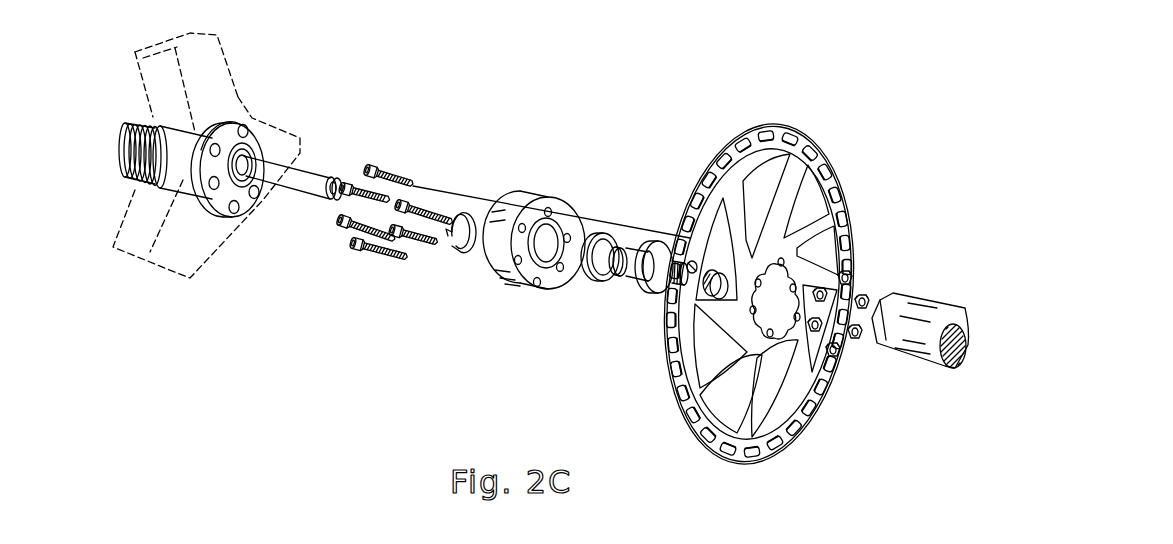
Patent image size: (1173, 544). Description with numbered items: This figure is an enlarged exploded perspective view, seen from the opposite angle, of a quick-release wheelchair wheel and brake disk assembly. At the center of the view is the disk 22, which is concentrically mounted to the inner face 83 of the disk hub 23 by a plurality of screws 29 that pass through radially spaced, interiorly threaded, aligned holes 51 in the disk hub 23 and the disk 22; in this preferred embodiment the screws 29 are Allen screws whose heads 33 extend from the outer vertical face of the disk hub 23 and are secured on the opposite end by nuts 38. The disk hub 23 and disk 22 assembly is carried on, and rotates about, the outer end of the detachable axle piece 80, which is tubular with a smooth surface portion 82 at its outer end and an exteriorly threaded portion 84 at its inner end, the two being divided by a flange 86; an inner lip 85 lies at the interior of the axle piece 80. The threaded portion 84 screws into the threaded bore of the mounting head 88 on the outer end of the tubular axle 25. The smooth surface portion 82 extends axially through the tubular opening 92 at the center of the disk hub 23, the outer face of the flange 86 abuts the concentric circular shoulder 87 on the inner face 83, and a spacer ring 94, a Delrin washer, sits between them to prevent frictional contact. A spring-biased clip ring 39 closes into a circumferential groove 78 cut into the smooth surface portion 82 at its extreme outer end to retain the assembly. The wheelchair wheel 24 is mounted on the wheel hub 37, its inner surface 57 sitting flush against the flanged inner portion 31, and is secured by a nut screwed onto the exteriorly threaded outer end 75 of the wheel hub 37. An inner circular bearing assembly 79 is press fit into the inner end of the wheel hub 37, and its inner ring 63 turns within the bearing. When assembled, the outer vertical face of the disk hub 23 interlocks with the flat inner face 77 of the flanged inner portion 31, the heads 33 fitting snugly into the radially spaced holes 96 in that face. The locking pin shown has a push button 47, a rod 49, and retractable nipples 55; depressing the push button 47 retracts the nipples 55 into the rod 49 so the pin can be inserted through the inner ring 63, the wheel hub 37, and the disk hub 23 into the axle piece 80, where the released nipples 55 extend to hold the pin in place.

The disk 22 is at (722, 166).
The disk hub 23 is at (506, 247).
The wheelchair wheel 24 is at (217, 91).
The tubular axle 25 is at (917, 329).
The screw 29 is at (420, 203).
The flanged inner portion 31 is at (243, 125).
The head 33 is at (352, 241).
The wheel hub 37 is at (175, 168).
The nut 38 is at (868, 296).
The clip ring 39 is at (466, 249).
The push button 47 is at (130, 162).
The rod 49 is at (312, 197).
The hole 51 is at (540, 285).
The retractable nipple 55 is at (332, 180).
The inner surface 57 is at (241, 94).
The inner ring 63 is at (248, 158).
The exteriorly threaded outer end 75 is at (160, 122).
The inner face 77 is at (225, 212).
The circumferential groove 78 is at (622, 279).
The inner circular bearing assembly 79 is at (237, 132).
The detachable axle piece 80 is at (648, 245).
The smooth surface portion 82 is at (638, 242).
The inner face 83 is at (546, 200).
The exteriorly threaded portion 84 is at (714, 270).
The inner lip 85 is at (729, 292).
The flange 86 is at (668, 240).
The circular shoulder 87 is at (530, 222).
The mounting head 88 is at (858, 340).
The tubular opening 92 is at (551, 212).
The spacer ring 94 is at (598, 282).
The hole 96 is at (257, 199).